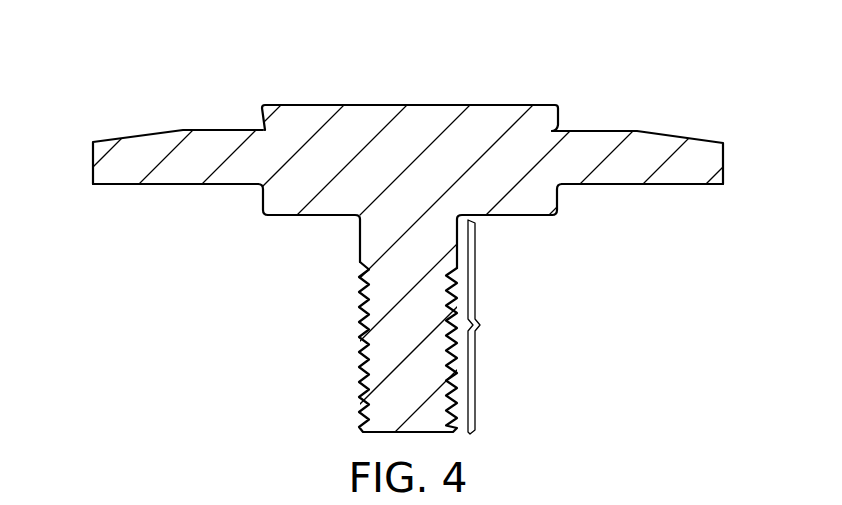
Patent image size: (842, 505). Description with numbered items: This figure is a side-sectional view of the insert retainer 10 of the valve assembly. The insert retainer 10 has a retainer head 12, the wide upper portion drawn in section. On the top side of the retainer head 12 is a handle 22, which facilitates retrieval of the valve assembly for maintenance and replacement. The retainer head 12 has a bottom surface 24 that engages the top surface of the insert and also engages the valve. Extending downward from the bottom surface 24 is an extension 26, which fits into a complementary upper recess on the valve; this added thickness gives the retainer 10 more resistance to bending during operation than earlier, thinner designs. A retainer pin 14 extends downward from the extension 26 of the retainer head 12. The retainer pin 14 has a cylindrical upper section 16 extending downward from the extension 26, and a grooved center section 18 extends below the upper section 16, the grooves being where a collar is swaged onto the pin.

The insert retainer 10 is at (184, 78).
The retainer head 12 is at (723, 163).
The retainer pin 14 is at (494, 327).
The cylindrical upper section 16 is at (360, 243).
The grooved center section 18 is at (362, 343).
The handle 22 is at (441, 105).
The bottom surface 24 is at (620, 185).
The extension 26 is at (520, 216).